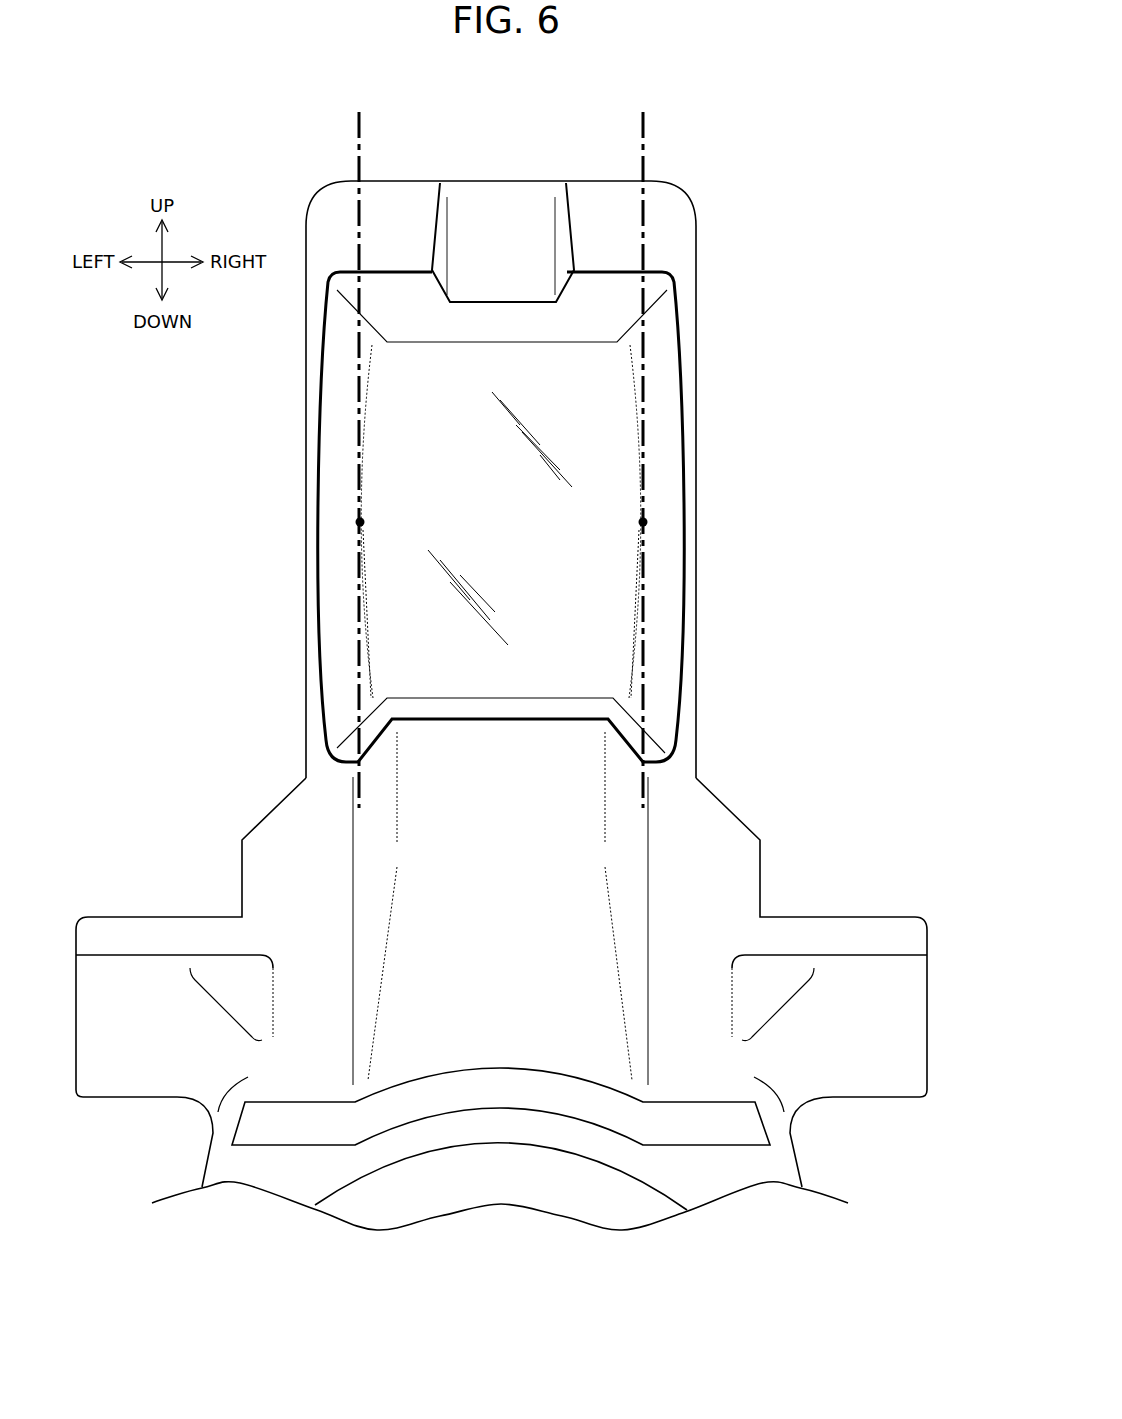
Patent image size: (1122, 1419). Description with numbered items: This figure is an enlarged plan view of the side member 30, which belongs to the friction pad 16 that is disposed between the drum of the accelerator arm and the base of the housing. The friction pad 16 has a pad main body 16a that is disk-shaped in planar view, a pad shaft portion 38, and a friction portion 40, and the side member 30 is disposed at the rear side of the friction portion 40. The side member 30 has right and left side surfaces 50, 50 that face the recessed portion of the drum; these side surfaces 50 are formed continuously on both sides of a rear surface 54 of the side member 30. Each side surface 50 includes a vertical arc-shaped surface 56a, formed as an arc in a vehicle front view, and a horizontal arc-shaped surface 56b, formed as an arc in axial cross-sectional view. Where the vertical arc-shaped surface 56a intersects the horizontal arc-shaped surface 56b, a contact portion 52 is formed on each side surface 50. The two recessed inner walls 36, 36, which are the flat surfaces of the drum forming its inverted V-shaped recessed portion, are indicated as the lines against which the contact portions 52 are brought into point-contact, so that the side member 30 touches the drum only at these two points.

The friction pad 16 is at (873, 1158).
The pad main body 16a is at (181, 1172).
The side member 30 is at (689, 392).
The recessed inner wall 36 is at (378, 144).
The pad shaft portion 38 is at (100, 1028).
The friction portion 40 is at (716, 320).
The side surface 50 is at (338, 452).
The contact portion 52 is at (357, 522).
The rear surface 54 is at (433, 393).
The vertical arc-shaped surface 56a is at (375, 595).
The horizontal arc-shaped surface 56b is at (340, 655).